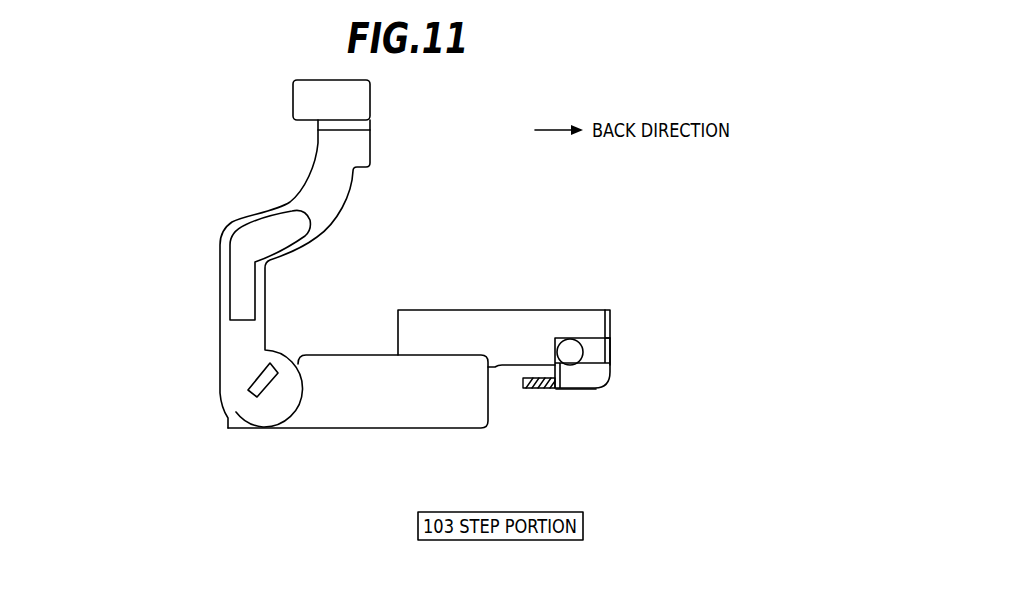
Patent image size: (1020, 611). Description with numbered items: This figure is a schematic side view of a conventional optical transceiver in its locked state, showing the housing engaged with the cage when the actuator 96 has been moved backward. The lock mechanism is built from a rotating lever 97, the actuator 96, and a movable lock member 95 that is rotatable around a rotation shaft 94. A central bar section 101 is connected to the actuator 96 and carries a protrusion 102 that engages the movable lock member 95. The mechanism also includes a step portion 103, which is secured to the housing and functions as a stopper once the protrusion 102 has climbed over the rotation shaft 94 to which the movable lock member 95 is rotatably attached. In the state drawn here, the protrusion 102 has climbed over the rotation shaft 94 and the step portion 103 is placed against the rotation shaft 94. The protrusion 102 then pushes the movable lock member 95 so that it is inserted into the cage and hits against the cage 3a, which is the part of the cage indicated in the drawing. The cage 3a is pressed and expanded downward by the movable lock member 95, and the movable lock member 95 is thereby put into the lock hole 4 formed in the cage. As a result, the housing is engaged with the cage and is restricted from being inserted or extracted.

The rotating lever 97 is at (244, 218).
The actuator 96 is at (340, 430).
The central bar section 101 is at (458, 310).
The step portion 103 is at (555, 350).
The protrusion 102 is at (611, 318).
The movable lock member 95 is at (605, 386).
The rotation shaft 94 is at (571, 339).
The cage 3a is at (565, 445).
The lock hole 4 is at (578, 398).